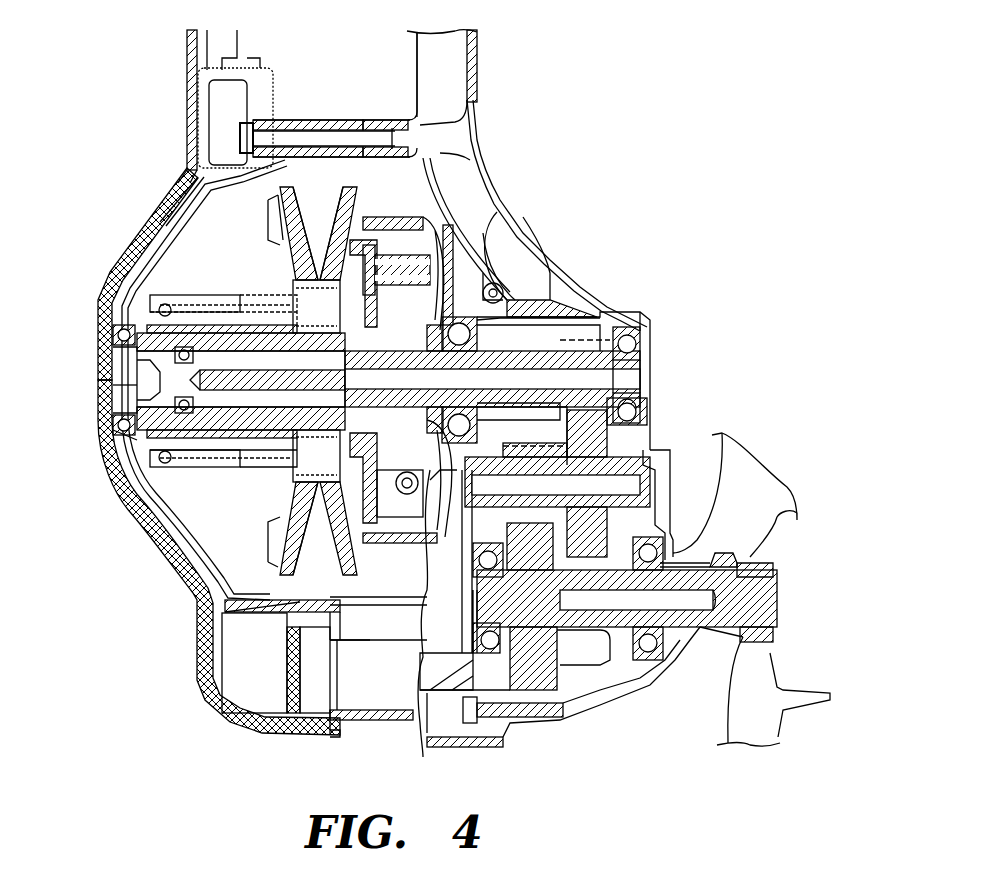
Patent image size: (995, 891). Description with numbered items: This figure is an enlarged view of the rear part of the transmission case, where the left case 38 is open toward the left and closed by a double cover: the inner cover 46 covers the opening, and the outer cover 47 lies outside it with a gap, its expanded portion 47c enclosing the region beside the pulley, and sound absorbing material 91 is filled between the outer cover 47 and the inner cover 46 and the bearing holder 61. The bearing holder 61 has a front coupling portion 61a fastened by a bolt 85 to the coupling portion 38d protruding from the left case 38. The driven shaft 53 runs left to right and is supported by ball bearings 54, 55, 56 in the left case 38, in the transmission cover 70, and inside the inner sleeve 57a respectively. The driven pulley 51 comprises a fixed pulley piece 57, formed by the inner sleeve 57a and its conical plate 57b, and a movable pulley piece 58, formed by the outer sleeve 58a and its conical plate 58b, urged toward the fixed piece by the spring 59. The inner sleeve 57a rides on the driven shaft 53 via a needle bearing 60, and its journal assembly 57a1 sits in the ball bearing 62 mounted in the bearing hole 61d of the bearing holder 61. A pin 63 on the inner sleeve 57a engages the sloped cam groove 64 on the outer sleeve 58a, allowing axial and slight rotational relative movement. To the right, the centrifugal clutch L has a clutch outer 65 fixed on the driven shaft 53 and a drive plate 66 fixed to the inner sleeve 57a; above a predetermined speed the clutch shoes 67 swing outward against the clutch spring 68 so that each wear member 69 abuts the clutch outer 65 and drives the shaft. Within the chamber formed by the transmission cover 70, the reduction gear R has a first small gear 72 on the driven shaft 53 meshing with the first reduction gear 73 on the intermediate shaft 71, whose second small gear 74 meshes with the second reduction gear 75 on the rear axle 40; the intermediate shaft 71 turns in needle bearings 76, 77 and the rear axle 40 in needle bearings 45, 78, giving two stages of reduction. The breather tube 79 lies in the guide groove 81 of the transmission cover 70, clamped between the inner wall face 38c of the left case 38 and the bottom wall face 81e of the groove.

The left case 38 is at (585, 268).
The inner wall face 38c is at (505, 212).
The coupling portion 38d is at (382, 118).
The rear axle 40 is at (720, 620).
The needle bearing 45 is at (648, 655).
The inner cover 46 is at (267, 65).
The outer cover 47 is at (175, 78).
The expanded portion 47c is at (100, 500).
The driven pulley 51 is at (264, 518).
The driven shaft 53 is at (640, 380).
The ball bearing 54 is at (640, 342).
The ball bearing 55 is at (462, 334).
The ball bearing 56 is at (153, 380).
The fixed pulley piece 57 is at (378, 208).
The inner sleeve 57a is at (265, 460).
The journal assembly 57a1 is at (110, 385).
The conical plate 57b is at (340, 215).
The movable pulley piece 58 is at (265, 221).
The outer sleeve 58a is at (240, 480).
The conical plate 58b is at (300, 240).
The spring 59 is at (195, 465).
The needle bearing 60 is at (388, 381).
The bearing holder 61 is at (200, 220).
The front coupling portion 61a is at (300, 120).
The bearing hole 61d is at (110, 432).
The ball bearing 62 is at (113, 340).
The pin 63 is at (267, 382).
The cam groove 64 is at (262, 325).
The clutch outer 65 is at (445, 225).
The drive plate 66 is at (396, 262).
The clutch shoe 67 is at (430, 545).
The clutch spring 68 is at (386, 478).
The wear member 69 is at (385, 545).
The transmission cover 70 is at (455, 325).
The intermediate shaft 71 is at (615, 470).
The first small gear 72 is at (590, 345).
The first reduction gear 73 is at (522, 434).
The second small gear 74 is at (535, 441).
The second reduction gear 75 is at (560, 658).
The needle bearing 76 is at (630, 450).
The needle bearing 77 is at (458, 535).
The needle bearing 78 is at (478, 643).
The breather tube 79 is at (553, 240).
The guide groove 81 is at (525, 250).
The bottom wall face 81e is at (473, 275).
The bolt 85 is at (240, 140).
The sound absorbing material 91 is at (140, 240).
The centrifugal clutch L is at (405, 206).
The reduction gear R is at (527, 423).